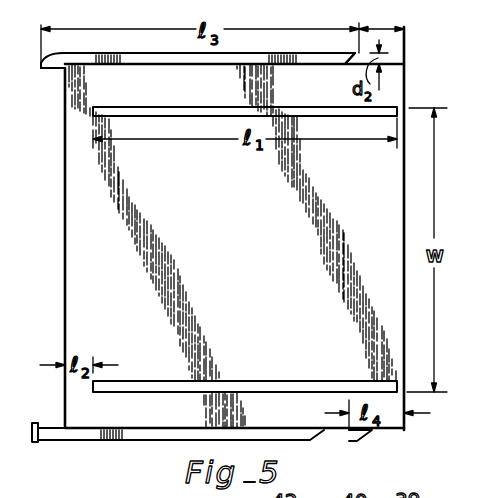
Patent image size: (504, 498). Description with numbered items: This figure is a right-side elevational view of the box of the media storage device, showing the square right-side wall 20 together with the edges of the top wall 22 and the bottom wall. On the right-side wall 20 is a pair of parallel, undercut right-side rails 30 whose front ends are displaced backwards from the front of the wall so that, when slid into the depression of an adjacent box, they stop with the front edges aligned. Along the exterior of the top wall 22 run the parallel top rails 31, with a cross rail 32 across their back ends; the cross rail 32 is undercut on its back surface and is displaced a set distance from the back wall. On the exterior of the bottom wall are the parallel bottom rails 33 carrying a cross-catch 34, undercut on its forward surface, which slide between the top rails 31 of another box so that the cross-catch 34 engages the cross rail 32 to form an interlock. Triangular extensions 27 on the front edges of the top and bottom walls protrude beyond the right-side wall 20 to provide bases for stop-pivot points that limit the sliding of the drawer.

The right-side wall 20 is at (248, 233).
The top wall 22 is at (401, 64).
The triangular extension 27 is at (56, 71).
The right-side rail 30 is at (184, 107).
The top rail 31 is at (96, 54).
The cross rail 32 is at (347, 54).
The bottom rail 33 is at (157, 443).
The cross-catch 34 is at (355, 442).